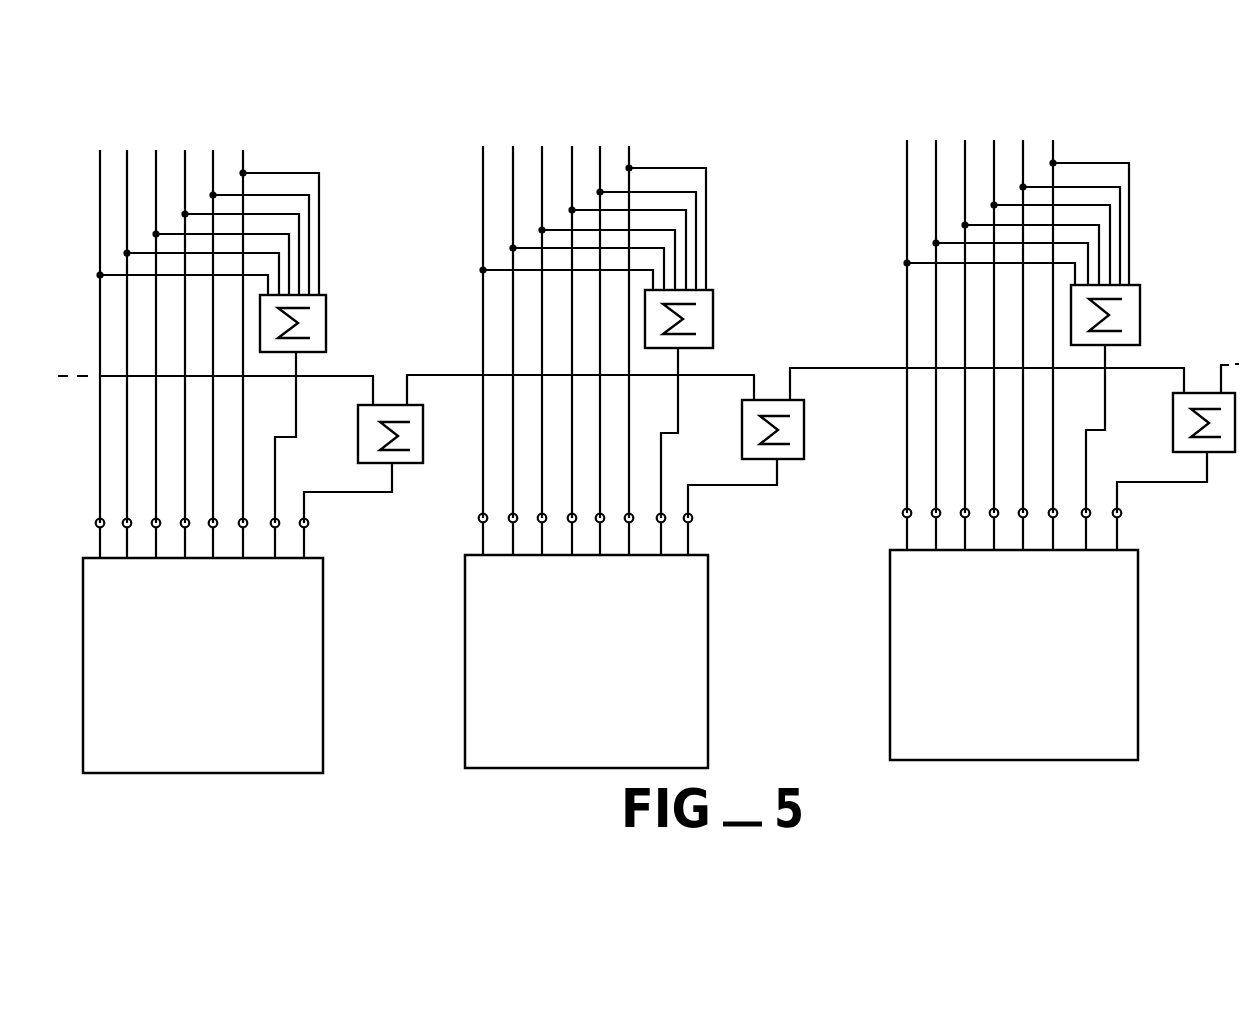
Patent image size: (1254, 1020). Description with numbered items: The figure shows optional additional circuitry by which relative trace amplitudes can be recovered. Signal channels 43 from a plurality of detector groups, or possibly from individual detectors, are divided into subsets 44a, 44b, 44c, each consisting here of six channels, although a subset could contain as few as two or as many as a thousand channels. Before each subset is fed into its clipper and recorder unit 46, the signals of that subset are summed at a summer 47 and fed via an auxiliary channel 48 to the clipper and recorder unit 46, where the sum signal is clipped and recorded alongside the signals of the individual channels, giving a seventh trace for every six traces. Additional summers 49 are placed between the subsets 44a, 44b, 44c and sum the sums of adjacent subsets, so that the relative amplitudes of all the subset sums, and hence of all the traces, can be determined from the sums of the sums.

The signal channels 43 is at (100, 229).
The subset of channels 44a is at (83, 146).
The subset of channels 44b is at (647, 144).
The subset of channels 44c is at (893, 138).
The clipper and recorder unit 46 is at (323, 590).
The summer 47 is at (327, 312).
The auxiliary channel 48 is at (296, 409).
The additional summer 49 is at (423, 445).